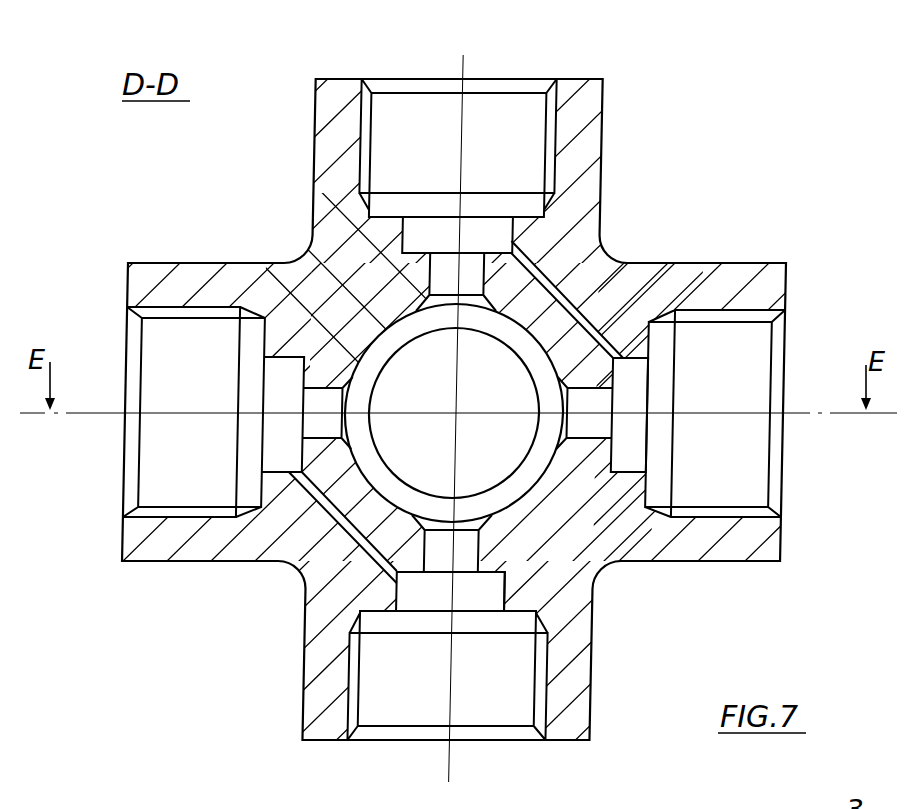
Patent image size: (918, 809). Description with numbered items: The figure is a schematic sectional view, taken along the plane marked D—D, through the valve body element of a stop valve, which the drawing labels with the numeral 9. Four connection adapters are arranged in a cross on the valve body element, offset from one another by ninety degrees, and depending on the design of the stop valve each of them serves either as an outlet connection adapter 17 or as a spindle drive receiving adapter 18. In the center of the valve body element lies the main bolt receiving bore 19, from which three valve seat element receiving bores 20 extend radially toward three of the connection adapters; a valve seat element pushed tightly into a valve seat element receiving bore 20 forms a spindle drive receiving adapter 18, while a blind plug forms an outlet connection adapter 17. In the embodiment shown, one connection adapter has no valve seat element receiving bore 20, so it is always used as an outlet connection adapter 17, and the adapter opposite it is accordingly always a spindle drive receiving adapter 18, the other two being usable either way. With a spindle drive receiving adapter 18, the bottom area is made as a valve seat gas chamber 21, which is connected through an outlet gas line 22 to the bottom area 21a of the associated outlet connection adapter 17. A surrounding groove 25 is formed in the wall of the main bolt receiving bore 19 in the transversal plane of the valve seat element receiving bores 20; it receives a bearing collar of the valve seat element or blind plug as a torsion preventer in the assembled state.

The valve body 9 is at (722, 40).
The outlet connection adapter 17 is at (728, 447).
The spindle drive receiving adapter 18 is at (412, 133).
The main bolt receiving bore 19 is at (493, 445).
The valve seat element receiving bore 20 is at (440, 273).
The valve seat gas chamber 21 is at (493, 231).
The bottom area of the outlet connection adapter 21a is at (637, 375).
The outlet gas line 22 is at (611, 258).
The surrounding groove 25 is at (382, 357).